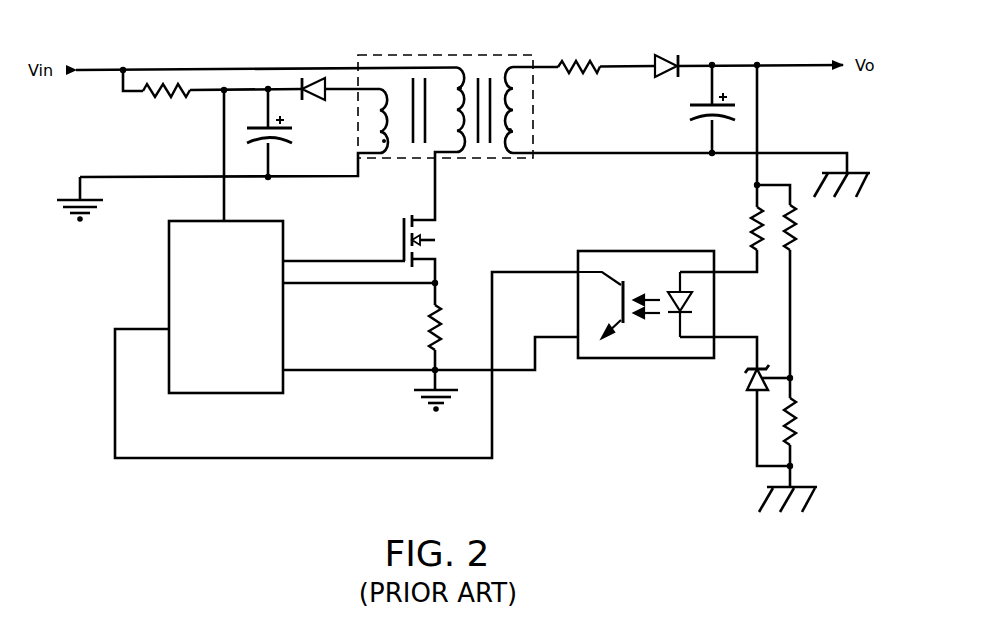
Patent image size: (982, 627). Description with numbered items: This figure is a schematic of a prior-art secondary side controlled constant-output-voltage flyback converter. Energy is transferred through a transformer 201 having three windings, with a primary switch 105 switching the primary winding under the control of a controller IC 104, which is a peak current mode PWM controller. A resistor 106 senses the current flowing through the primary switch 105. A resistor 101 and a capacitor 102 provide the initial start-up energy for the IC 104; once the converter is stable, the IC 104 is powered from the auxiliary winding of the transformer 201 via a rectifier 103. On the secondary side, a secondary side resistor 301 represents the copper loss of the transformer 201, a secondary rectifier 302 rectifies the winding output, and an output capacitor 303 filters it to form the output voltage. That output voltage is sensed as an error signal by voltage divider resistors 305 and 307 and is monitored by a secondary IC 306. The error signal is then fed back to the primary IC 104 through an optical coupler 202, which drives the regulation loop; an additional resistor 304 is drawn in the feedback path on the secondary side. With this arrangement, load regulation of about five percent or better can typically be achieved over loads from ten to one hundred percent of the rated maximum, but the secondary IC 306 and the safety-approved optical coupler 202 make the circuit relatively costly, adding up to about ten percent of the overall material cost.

The resistor 101 is at (168, 98).
The capacitor 102 is at (282, 142).
The rectifier 103 is at (314, 101).
The controller IC 104 is at (232, 309).
The primary switch 105 is at (402, 241).
The resistor 106 is at (428, 334).
The transformer 201 is at (455, 54).
The optical coupler 202 is at (656, 251).
The secondary side resistor 301 is at (581, 60).
The secondary rectifier 302 is at (666, 55).
The output capacitor 303 is at (700, 119).
The resistor 304 is at (751, 228).
The voltage divider resistor 305 is at (795, 233).
The secondary IC 306 is at (698, 404).
The voltage divider resistor 307 is at (796, 426).